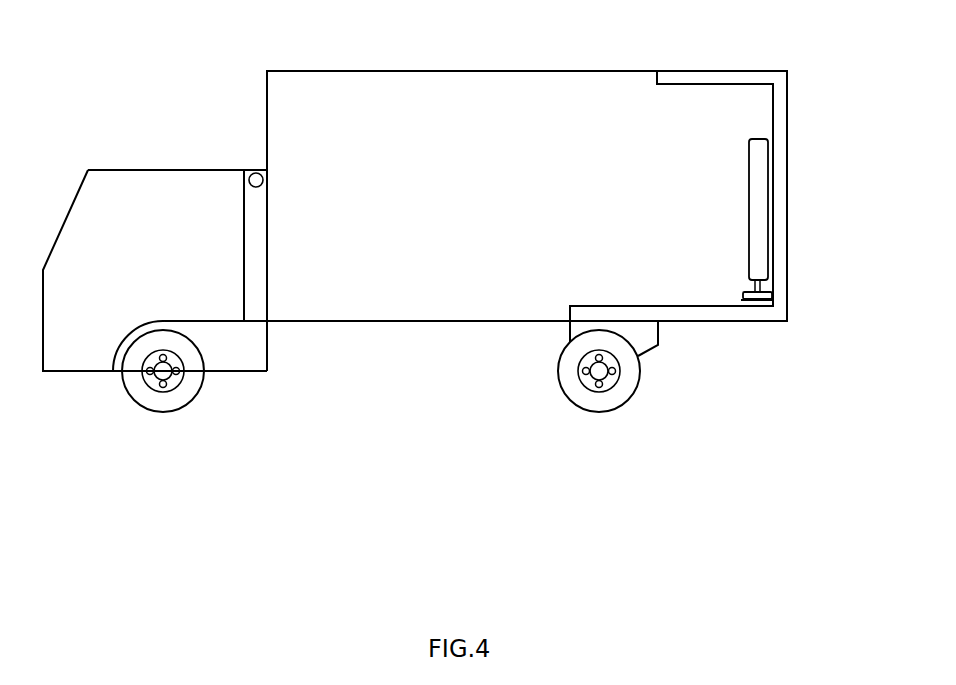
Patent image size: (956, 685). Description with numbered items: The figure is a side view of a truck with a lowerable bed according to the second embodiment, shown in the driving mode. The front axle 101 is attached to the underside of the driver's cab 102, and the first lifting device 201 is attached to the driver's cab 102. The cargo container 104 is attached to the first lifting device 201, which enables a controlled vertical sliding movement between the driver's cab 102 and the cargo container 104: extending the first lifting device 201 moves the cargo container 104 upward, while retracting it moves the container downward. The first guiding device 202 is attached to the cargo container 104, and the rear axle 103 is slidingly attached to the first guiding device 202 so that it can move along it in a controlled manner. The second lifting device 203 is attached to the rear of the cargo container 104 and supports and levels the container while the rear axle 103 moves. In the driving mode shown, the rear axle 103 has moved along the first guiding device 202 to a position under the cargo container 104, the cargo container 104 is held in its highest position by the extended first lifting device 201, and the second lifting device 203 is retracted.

The front axle 101 is at (147, 412).
The driver's cab 102 is at (110, 165).
The rear axle 103 is at (583, 412).
The cargo container 104 is at (437, 68).
The first lifting device 201 is at (253, 165).
The first guiding device 202 is at (669, 79).
The second lifting device 203 is at (756, 135).